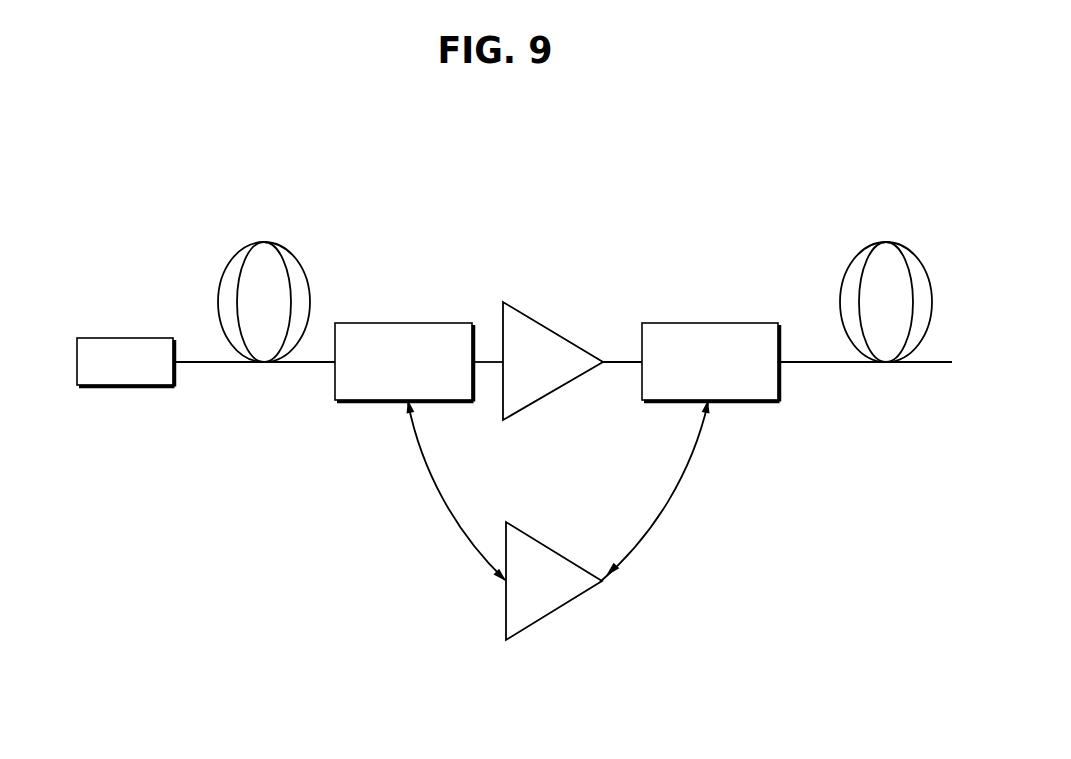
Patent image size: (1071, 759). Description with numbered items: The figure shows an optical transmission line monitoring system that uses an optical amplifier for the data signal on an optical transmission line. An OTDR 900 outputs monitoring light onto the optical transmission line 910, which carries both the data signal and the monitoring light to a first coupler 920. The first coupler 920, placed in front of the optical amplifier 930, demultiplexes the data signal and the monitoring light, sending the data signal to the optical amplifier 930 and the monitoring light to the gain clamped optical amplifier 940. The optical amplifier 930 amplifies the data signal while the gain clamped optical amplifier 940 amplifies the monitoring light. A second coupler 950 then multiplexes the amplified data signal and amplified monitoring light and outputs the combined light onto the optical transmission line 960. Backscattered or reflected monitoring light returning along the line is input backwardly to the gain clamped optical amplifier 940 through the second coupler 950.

The OTDR 900 is at (135, 337).
The optical transmission line 910 is at (269, 243).
The first coupler 920 is at (433, 322).
The optical amplifier 930 is at (558, 328).
The gain clamped optical amplifier 940 is at (557, 547).
The second coupler 950 is at (698, 322).
The optical transmission line 960 is at (893, 240).